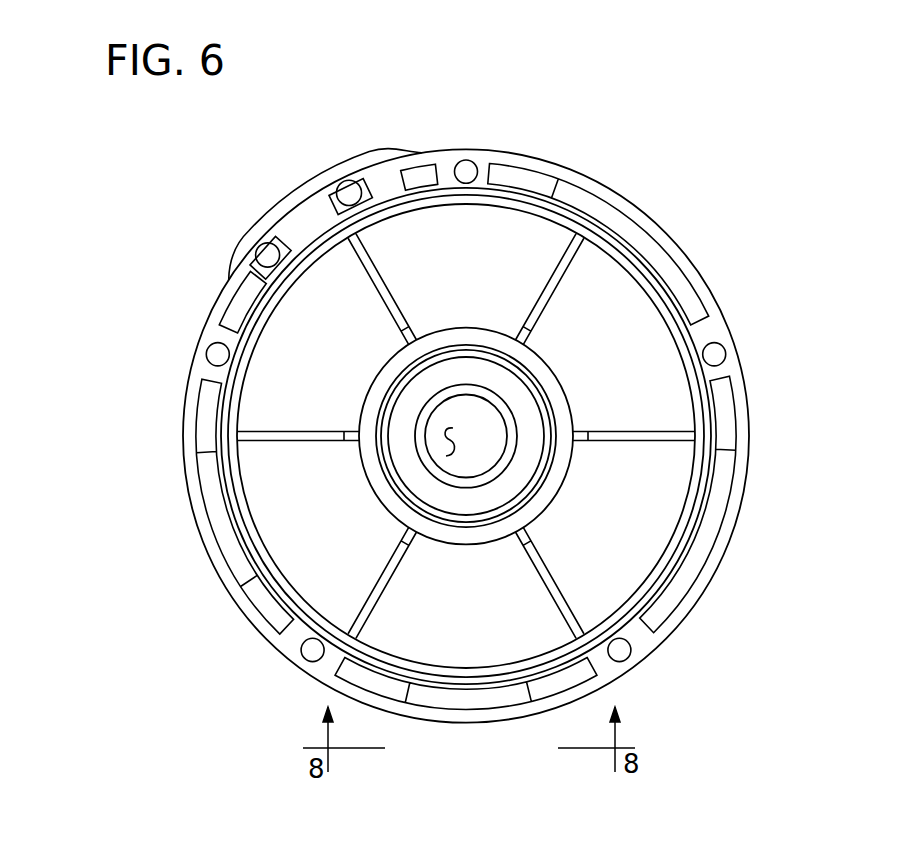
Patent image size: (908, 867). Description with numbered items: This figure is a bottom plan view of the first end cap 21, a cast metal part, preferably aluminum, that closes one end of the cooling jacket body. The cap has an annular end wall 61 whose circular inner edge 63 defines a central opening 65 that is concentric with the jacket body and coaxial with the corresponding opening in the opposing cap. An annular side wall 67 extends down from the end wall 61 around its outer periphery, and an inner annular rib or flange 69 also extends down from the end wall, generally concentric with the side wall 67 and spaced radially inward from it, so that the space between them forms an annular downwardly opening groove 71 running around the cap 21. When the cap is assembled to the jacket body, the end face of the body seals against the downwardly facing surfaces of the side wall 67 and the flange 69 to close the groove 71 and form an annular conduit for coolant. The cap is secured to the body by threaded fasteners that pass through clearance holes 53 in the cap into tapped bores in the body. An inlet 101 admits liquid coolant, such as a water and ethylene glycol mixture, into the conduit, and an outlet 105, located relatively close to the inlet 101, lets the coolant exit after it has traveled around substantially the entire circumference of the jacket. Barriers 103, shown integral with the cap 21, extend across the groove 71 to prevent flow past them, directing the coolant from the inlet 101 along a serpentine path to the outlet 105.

The first end cap 21 is at (656, 190).
The clearance holes 53 is at (468, 163).
The annular end wall 61 is at (330, 583).
The circular inner edge 63 is at (500, 463).
The central opening 65 is at (443, 438).
The annular side wall 67 is at (714, 313).
The inner annular rib or flange 69 is at (673, 297).
The annular downwardly opening groove 71 is at (654, 252).
The inlet 101 is at (258, 243).
The barriers 103 is at (222, 343).
The outlet 105 is at (352, 181).